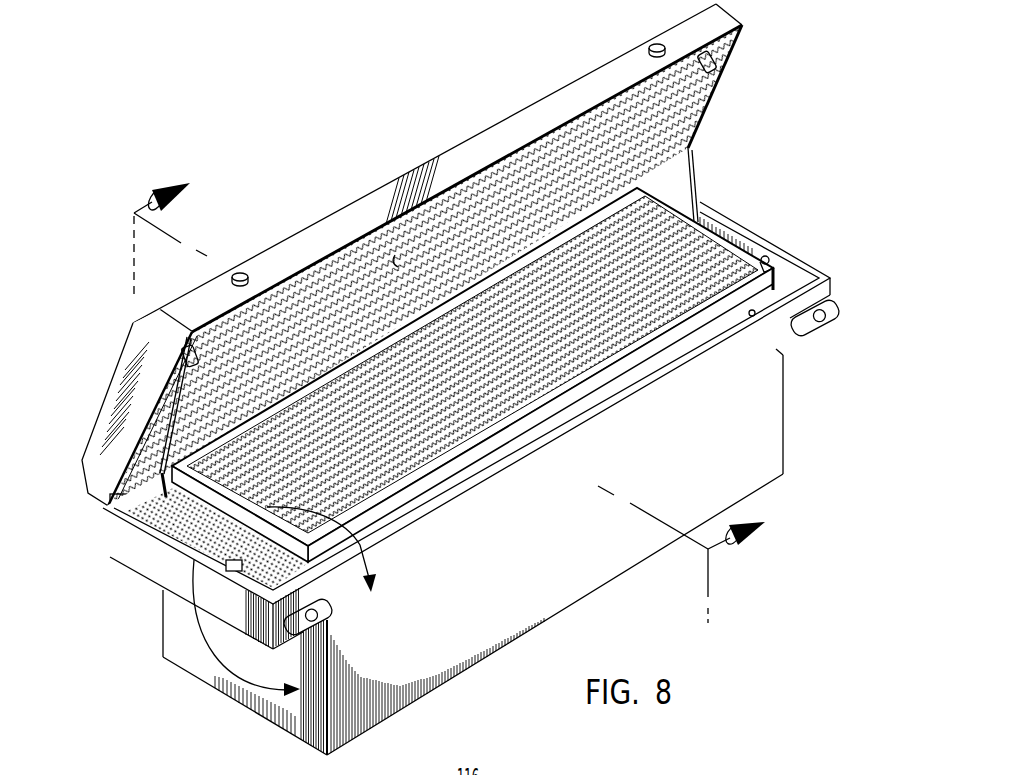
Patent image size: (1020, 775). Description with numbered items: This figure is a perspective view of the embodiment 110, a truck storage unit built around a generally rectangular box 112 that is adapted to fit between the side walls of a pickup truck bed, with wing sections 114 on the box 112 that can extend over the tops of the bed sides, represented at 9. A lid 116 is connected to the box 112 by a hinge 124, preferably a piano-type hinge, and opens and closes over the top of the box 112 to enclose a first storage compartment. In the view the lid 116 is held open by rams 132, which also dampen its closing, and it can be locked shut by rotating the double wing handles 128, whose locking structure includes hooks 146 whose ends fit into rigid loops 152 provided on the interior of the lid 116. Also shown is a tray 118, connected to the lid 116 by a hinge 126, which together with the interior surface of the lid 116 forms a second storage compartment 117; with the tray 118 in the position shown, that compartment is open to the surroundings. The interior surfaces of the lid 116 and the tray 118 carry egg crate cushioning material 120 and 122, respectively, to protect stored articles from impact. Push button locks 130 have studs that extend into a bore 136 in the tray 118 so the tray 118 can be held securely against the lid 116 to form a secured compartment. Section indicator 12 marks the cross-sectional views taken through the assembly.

The embodiment 110 is at (600, 624).
The box 112 is at (556, 543).
The wing sections 114 is at (468, 468).
The lid 116 is at (412, 257).
The second storage compartment 117 is at (540, 196).
The tray 118 is at (472, 375).
The cushioning material 120 is at (392, 263).
The cushioning material 122 is at (655, 312).
The hinge 124 is at (100, 515).
The hinge 126 is at (110, 557).
The double wing handles 128 is at (340, 618).
The push button locks 130 is at (240, 271).
The rams 132 is at (152, 460).
The bore 136 is at (353, 555).
The hooks 146 is at (766, 256).
The rigid loops 152 is at (193, 318).
The section line 12- 12 is at (462, 393).
The pickup truck bed sides 9 is at (284, 601).